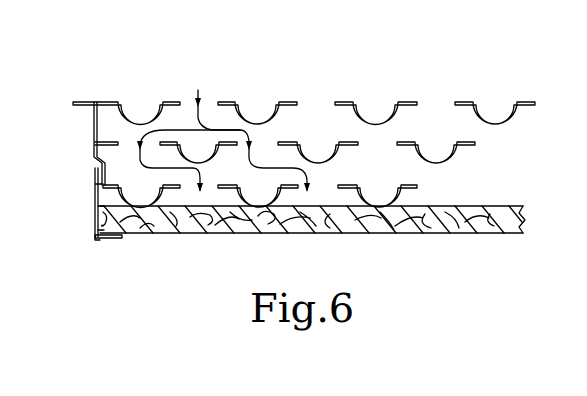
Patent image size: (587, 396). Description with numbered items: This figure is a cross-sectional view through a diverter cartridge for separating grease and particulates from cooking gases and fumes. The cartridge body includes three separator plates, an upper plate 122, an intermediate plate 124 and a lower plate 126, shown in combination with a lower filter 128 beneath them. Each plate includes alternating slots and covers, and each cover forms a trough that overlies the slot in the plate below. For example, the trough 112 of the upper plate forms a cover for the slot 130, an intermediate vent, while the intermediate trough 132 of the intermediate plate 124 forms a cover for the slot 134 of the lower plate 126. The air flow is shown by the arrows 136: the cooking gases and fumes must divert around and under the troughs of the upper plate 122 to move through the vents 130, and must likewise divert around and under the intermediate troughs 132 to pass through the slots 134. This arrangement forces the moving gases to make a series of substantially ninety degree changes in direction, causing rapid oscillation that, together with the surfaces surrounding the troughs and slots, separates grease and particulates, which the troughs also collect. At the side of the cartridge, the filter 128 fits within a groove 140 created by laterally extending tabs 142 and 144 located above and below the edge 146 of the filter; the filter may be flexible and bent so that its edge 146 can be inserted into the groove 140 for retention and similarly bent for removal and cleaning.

The trough 112 is at (256, 117).
The upper separator plate 122 is at (517, 108).
The intermediate separator plate 124 is at (457, 152).
The lower separator plate 126 is at (393, 200).
The lower filter 128 is at (495, 230).
The slot 130 is at (265, 142).
The intermediate trough 132 is at (317, 158).
The slot 134 is at (319, 172).
The air flow arrows 136 is at (185, 100).
The groove 140 is at (97, 241).
The laterally extending tab 142 is at (118, 239).
The laterally extending tab 144 is at (96, 194).
The edge of the filter 146 is at (95, 220).